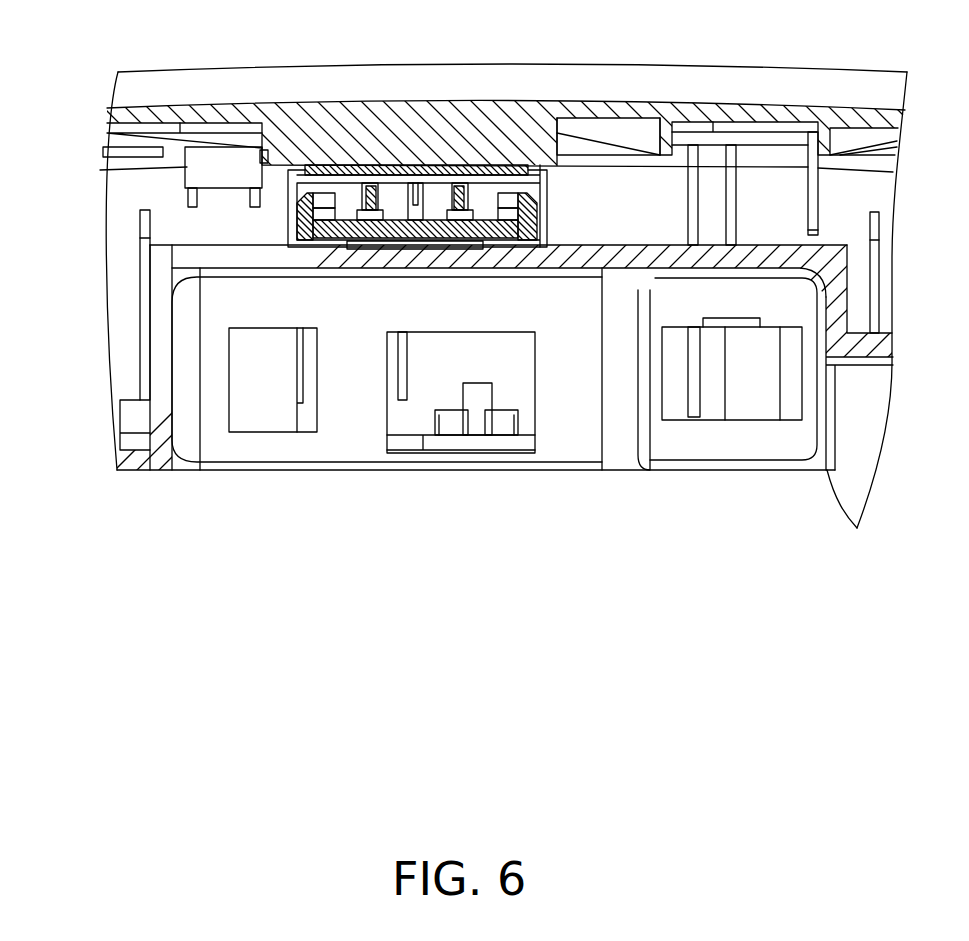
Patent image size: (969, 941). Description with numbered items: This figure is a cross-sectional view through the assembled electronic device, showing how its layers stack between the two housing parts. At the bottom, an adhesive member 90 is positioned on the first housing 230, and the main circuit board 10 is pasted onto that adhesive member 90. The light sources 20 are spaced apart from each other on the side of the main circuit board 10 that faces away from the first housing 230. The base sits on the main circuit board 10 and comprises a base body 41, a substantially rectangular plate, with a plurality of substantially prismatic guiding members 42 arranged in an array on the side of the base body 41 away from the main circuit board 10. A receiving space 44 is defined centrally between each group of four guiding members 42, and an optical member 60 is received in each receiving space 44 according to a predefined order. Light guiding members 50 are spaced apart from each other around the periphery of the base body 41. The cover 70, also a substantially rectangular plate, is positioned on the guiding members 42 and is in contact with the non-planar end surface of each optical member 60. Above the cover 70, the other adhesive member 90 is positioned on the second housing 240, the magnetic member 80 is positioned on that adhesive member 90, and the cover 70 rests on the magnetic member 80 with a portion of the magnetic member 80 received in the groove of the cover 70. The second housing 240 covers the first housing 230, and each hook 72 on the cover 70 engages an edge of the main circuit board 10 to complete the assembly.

The main circuit board 10 is at (430, 250).
The light source 20 is at (297, 233).
The first housing 230 is at (168, 275).
The second housing 240 is at (793, 80).
The base body 41 is at (650, 157).
The guiding member 42 is at (500, 230).
The receiving space 44 is at (327, 197).
The light guiding member 50 is at (315, 207).
The optical member 60 is at (415, 193).
The cover 70 is at (300, 173).
The hook 72 is at (187, 182).
The magnetic member 80 is at (488, 200).
The adhesive member 90 is at (447, 163).